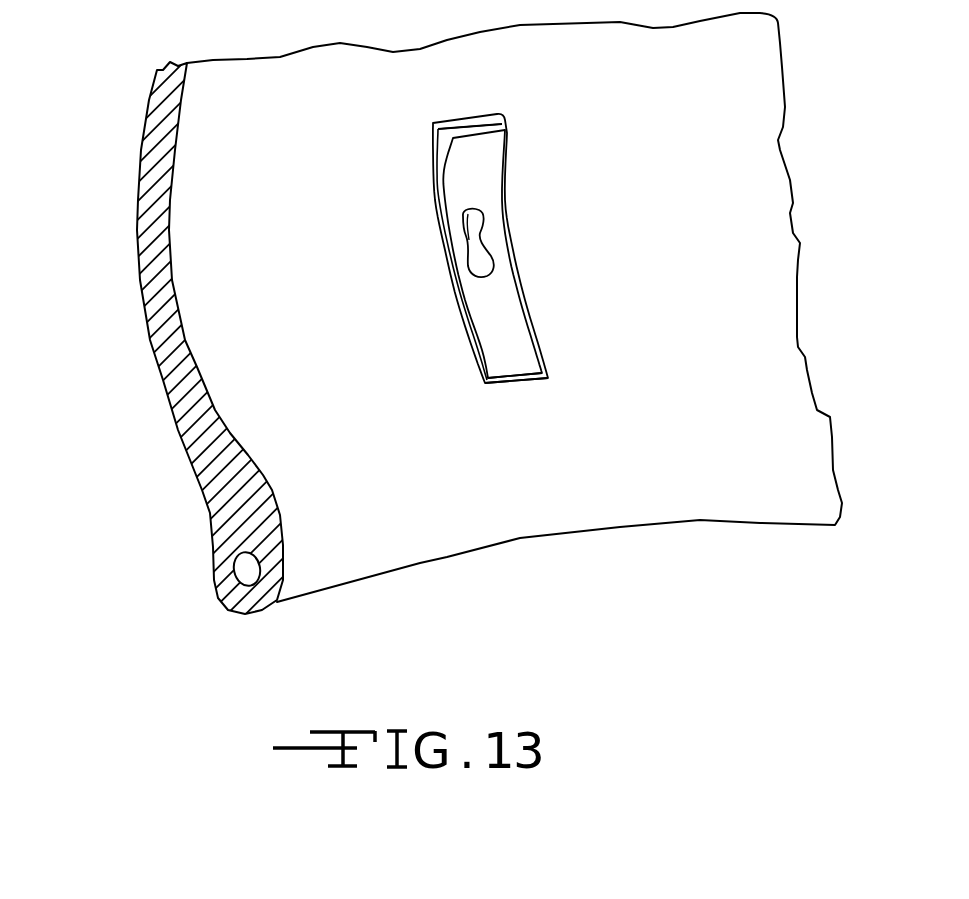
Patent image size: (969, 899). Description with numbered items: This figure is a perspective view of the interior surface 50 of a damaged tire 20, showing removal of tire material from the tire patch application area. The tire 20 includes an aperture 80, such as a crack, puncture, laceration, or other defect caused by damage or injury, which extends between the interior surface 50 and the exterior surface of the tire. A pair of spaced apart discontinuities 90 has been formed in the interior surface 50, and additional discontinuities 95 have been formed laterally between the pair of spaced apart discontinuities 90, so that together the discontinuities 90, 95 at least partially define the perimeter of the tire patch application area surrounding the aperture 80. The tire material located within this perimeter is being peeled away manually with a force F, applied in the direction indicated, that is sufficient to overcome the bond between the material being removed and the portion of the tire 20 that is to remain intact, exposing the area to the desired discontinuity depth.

The tire 20 is at (156, 410).
The interior surface 50 is at (695, 387).
The aperture 80 is at (477, 227).
The pair of spaced apart discontinuities 90 is at (512, 261).
The additional discontinuities 95 is at (463, 118).
The force F is at (480, 153).